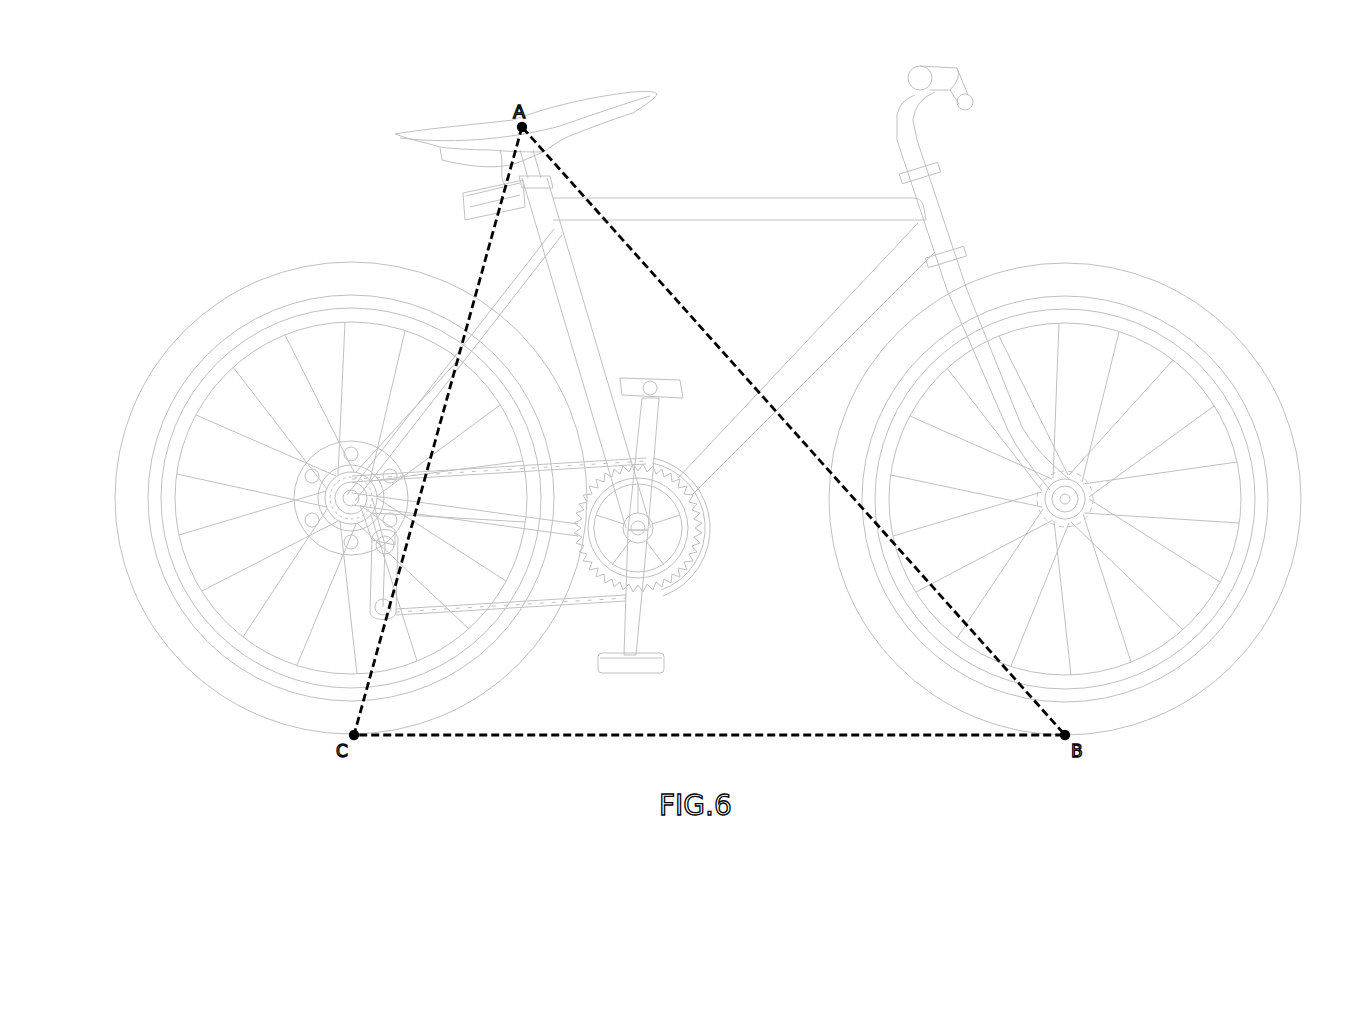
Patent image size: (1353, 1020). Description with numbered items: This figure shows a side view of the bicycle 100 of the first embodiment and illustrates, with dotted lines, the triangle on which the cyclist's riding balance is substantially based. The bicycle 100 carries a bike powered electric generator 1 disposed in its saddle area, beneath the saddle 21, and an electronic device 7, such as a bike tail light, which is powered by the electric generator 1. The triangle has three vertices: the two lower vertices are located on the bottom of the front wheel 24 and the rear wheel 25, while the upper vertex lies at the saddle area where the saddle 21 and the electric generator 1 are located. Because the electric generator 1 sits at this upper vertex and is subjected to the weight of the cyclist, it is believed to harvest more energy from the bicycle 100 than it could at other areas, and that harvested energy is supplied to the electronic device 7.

The bicycle 100 is at (710, 411).
The saddle 21 is at (437, 130).
The bike powered electric generator 1 is at (442, 160).
The electronic device 7 is at (467, 203).
The front wheel 24 is at (1212, 683).
The rear wheel 25 is at (205, 682).